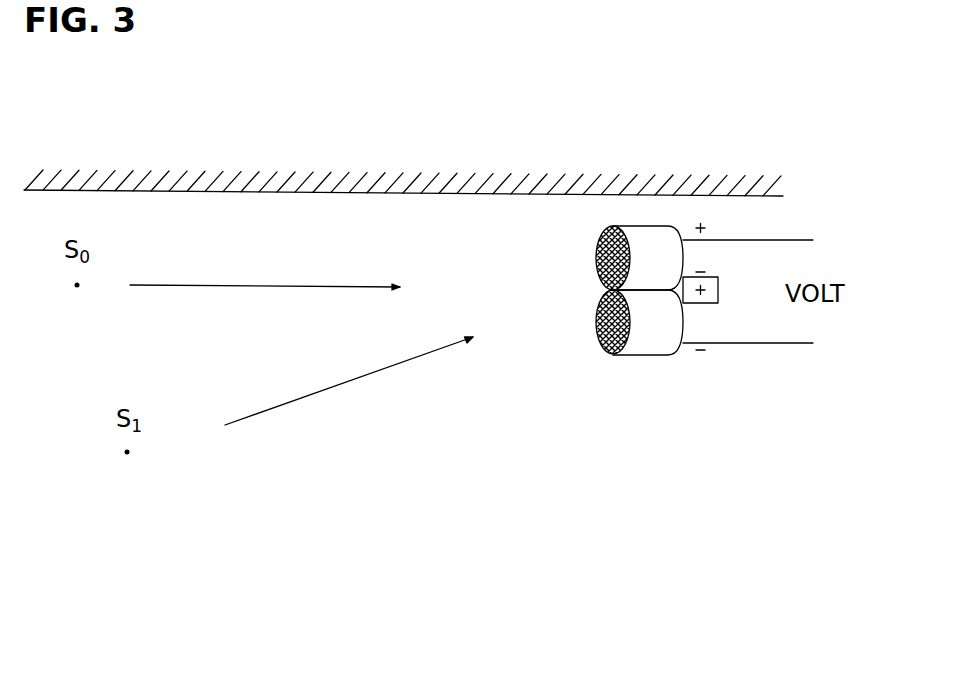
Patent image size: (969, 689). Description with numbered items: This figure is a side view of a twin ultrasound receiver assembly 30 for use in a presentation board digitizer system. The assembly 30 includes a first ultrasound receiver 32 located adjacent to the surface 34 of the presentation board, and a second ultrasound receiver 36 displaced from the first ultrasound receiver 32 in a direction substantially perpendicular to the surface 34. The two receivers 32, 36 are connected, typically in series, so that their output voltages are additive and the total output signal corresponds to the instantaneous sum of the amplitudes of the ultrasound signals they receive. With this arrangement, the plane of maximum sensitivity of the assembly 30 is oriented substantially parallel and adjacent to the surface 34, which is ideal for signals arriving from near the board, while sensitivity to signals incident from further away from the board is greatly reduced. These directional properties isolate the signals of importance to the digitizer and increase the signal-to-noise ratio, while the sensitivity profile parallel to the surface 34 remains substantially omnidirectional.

The ultrasound receiver assembly 30 is at (732, 181).
The first ultrasound receiver 32 is at (648, 233).
The surface 34 is at (420, 178).
The second ultrasound receiver 36 is at (647, 358).